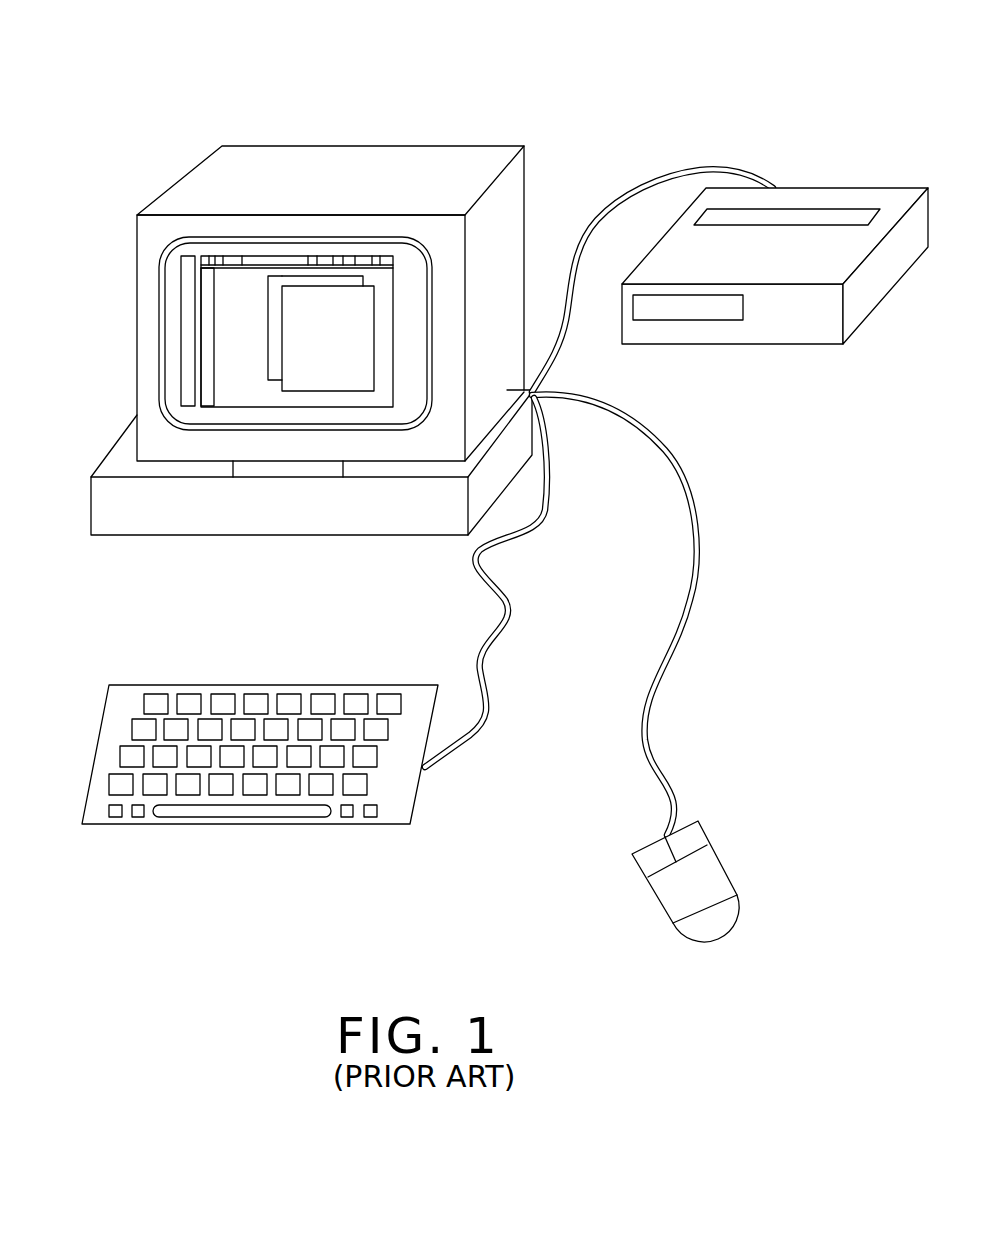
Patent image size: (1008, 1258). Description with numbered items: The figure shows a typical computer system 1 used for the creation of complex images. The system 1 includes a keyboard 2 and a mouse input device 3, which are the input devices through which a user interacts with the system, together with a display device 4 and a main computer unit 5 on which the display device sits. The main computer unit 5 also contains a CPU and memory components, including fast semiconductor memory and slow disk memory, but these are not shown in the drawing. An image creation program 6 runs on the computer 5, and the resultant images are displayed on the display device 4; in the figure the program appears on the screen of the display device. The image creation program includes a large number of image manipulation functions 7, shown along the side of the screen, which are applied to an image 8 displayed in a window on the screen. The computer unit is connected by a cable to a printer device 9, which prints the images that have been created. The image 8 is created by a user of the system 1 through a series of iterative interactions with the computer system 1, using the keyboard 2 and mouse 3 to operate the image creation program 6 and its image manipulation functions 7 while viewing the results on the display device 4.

The computer system 1 is at (552, 100).
The keyboard 2 is at (213, 824).
The mouse input device 3 is at (723, 868).
The display device 4 is at (137, 257).
The main computer unit 5 is at (91, 512).
The image creation program 6 is at (249, 258).
The image manipulation functions 7 is at (180, 361).
The image 8 is at (364, 391).
The printer device 9 is at (706, 352).